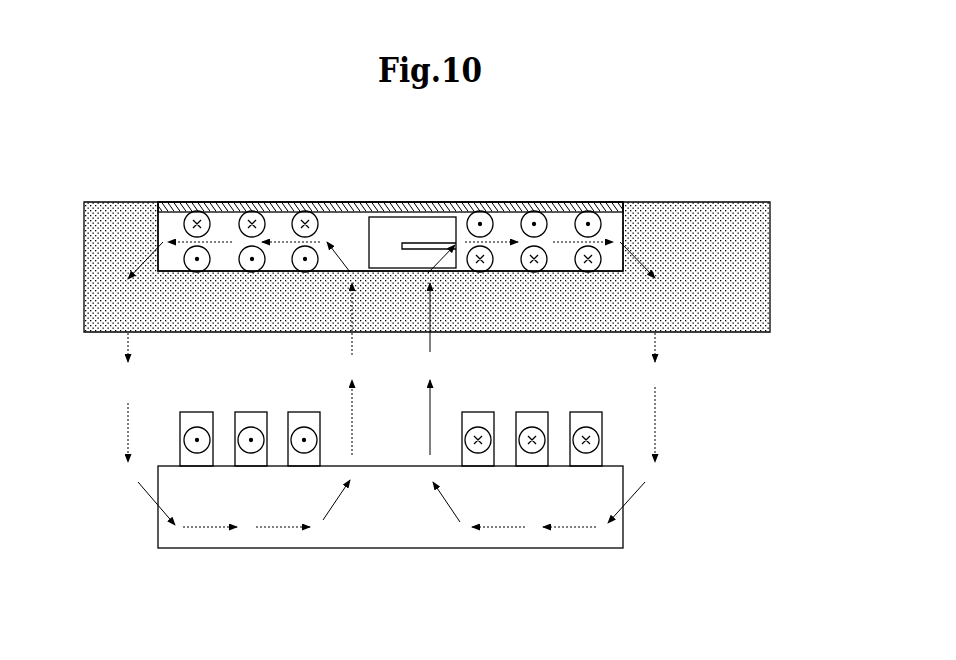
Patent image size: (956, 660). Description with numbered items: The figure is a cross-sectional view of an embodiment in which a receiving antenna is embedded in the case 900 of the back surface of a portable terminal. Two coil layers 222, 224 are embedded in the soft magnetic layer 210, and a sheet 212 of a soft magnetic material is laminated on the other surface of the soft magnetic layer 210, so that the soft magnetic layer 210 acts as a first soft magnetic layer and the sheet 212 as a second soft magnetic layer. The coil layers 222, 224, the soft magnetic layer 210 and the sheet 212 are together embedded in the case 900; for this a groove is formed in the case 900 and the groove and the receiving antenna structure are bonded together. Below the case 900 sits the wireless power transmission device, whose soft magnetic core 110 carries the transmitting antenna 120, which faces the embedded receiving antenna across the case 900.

The soft magnetic core 110 is at (398, 548).
The transmitting antenna 120 is at (603, 420).
The soft magnetic layer 210 is at (623, 222).
The sheet of a soft magnetic material 212 is at (352, 202).
The coil layer 222 is at (568, 218).
The coil layer 224 is at (213, 247).
The case of a back surface of a portable terminal 900 is at (733, 322).